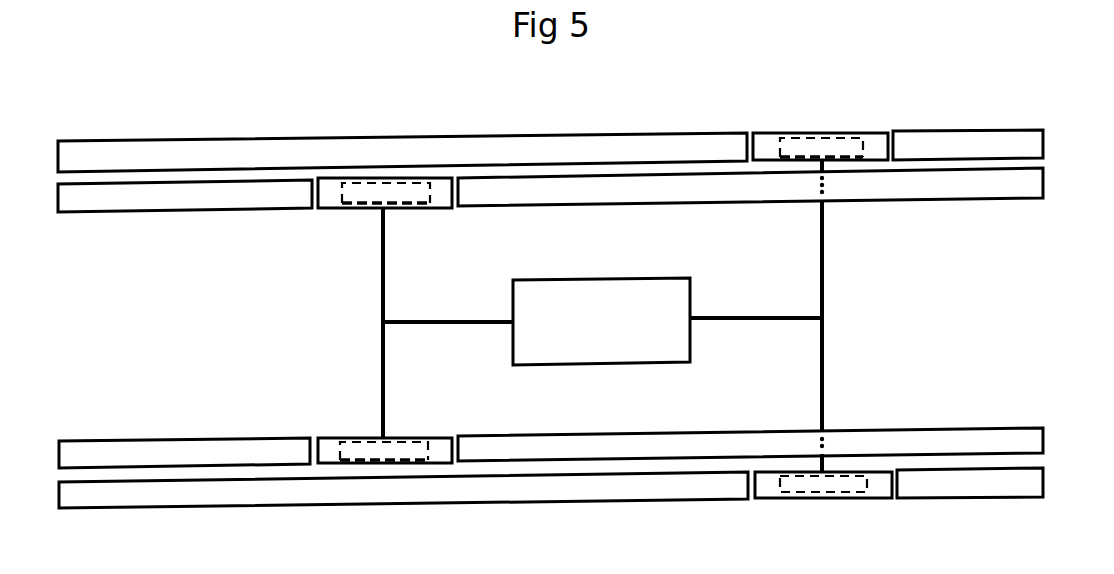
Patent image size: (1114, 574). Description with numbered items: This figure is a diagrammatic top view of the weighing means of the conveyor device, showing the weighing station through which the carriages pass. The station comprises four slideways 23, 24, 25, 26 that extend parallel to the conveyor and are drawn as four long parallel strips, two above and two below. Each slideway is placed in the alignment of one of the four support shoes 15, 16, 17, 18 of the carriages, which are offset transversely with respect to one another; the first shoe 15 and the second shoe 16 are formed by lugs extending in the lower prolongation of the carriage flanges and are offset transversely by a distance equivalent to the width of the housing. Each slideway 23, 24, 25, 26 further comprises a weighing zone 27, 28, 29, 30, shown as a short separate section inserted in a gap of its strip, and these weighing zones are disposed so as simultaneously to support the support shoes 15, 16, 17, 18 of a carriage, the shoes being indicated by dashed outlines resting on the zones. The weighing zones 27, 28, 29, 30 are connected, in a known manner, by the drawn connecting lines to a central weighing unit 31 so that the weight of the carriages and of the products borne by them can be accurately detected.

The first support shoe 15 is at (362, 466).
The second support shoe 16 is at (834, 484).
The support shoe 17 is at (372, 196).
The support shoe 18 is at (801, 144).
The slideway 23 is at (1034, 446).
The slideway 24 is at (1034, 478).
The slideway 25 is at (1043, 152).
The slideway 26 is at (1040, 192).
The weighing zone 27 is at (384, 461).
The weighing zone 28 is at (826, 518).
The weighing zone 29 is at (384, 146).
The weighing zone 30 is at (820, 114).
The weighing unit 31 is at (665, 293).